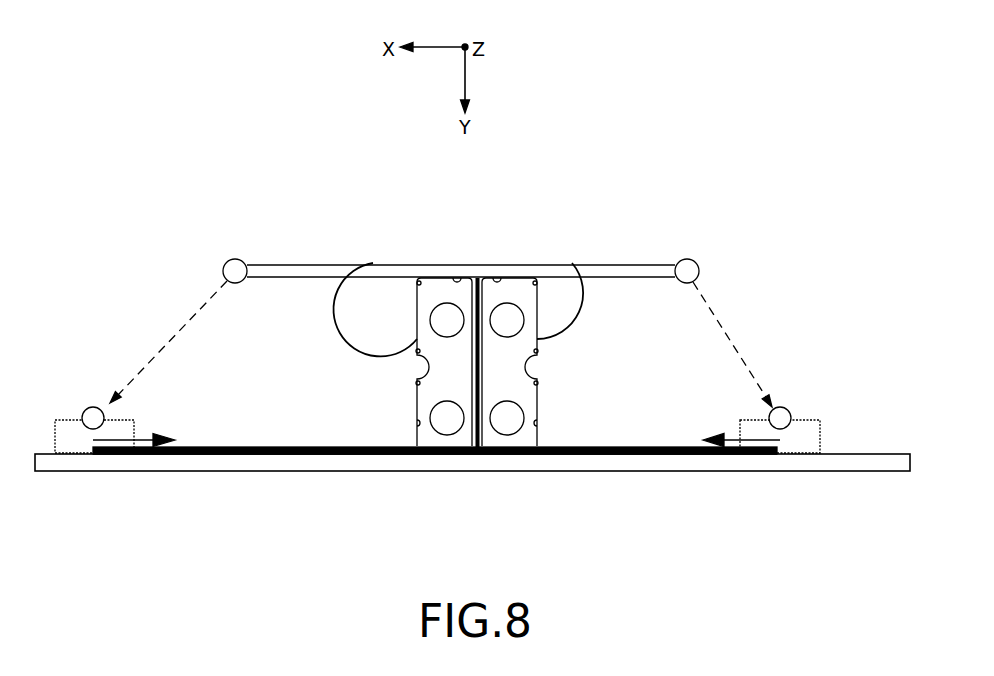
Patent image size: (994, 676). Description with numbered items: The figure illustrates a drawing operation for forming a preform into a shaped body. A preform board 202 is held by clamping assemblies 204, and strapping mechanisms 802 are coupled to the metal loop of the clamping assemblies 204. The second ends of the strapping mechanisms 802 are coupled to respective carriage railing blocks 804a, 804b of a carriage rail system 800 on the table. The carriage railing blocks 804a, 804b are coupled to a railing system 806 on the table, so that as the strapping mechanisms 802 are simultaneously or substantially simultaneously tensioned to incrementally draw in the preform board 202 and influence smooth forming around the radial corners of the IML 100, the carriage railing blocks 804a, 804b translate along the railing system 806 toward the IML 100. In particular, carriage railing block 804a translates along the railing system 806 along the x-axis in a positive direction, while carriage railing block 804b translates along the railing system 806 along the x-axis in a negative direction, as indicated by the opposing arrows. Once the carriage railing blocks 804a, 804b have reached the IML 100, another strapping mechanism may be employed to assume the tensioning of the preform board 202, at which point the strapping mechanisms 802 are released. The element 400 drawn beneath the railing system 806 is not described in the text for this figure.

The IML 100 is at (510, 276).
The preform board 202 is at (397, 273).
The clamping assemblies 204 is at (685, 262).
The substrate sheet 400 is at (420, 457).
The carriage rail system 800 is at (624, 461).
The strapping mechanisms 802 is at (165, 347).
The carriage railing block 804a is at (72, 428).
The carriage railing block 804b is at (805, 420).
The railing system 806 is at (287, 443).